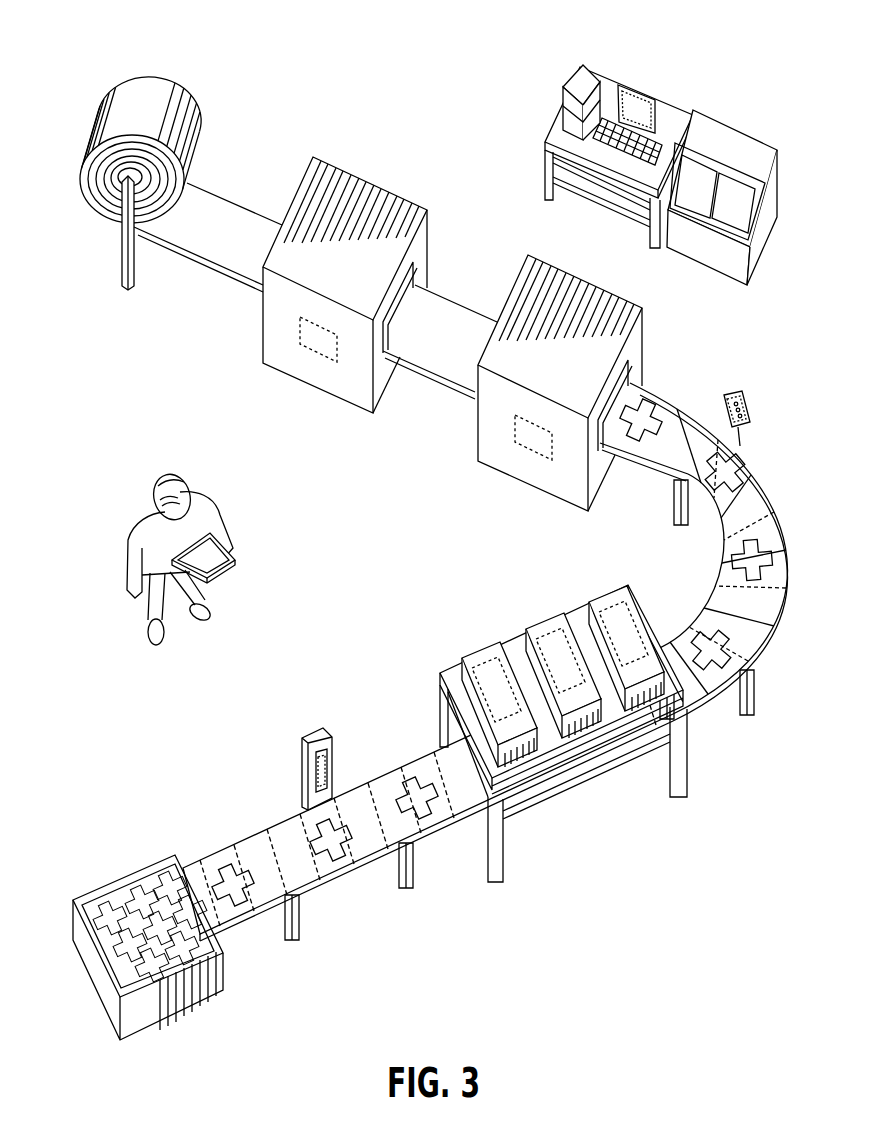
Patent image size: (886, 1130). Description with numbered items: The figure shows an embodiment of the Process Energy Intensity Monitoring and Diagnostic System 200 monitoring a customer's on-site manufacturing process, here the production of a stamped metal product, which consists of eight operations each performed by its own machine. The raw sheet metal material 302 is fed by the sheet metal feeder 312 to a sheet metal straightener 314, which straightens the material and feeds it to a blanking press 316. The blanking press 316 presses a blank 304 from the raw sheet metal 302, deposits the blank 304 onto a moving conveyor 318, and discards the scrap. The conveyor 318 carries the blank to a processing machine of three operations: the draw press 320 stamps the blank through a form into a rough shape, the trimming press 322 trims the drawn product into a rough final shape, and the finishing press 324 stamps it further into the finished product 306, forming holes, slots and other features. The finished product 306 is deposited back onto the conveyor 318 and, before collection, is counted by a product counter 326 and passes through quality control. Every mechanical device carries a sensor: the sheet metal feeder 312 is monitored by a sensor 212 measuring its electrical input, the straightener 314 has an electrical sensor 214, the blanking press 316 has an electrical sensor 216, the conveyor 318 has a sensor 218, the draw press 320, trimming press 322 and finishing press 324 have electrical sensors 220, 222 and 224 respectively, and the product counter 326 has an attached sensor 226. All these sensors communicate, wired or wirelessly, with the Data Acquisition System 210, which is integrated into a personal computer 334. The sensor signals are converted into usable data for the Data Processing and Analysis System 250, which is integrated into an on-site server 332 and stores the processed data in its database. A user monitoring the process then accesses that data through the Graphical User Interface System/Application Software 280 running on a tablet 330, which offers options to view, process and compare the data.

The Process Energy Intensity Monitoring and Diagnostic System 200 is at (86, 68).
The raw sheet metal material 302 is at (203, 115).
The sheet metal feeder 312 is at (112, 205).
The sensor 212 is at (118, 268).
The sheet metal straightener 314 is at (373, 185).
The electrical sensor 214 is at (317, 353).
The blanking press 316 is at (580, 277).
The electrical sensor 216 is at (530, 450).
The Data Acquisition System 210 is at (590, 70).
The personal computer 334 is at (562, 108).
The Data Processing and Analysis System 250 is at (736, 127).
The on-site server 332 is at (770, 190).
The sensor 218 is at (750, 407).
The blank 304 is at (770, 558).
The conveyor 318 is at (768, 627).
The finished product 306 is at (350, 858).
The draw press 320 is at (660, 713).
The electrical sensor 220 is at (613, 607).
The electrical sensor 222 is at (569, 697).
The electrical sensor 224 is at (510, 725).
The trimming press 322 is at (578, 727).
The finishing press 324 is at (522, 758).
The product counter 326 is at (313, 728).
The sensor 226 is at (332, 772).
The tablet 330 is at (233, 555).
The Graphical User Interface System/Application Software 280 is at (210, 573).